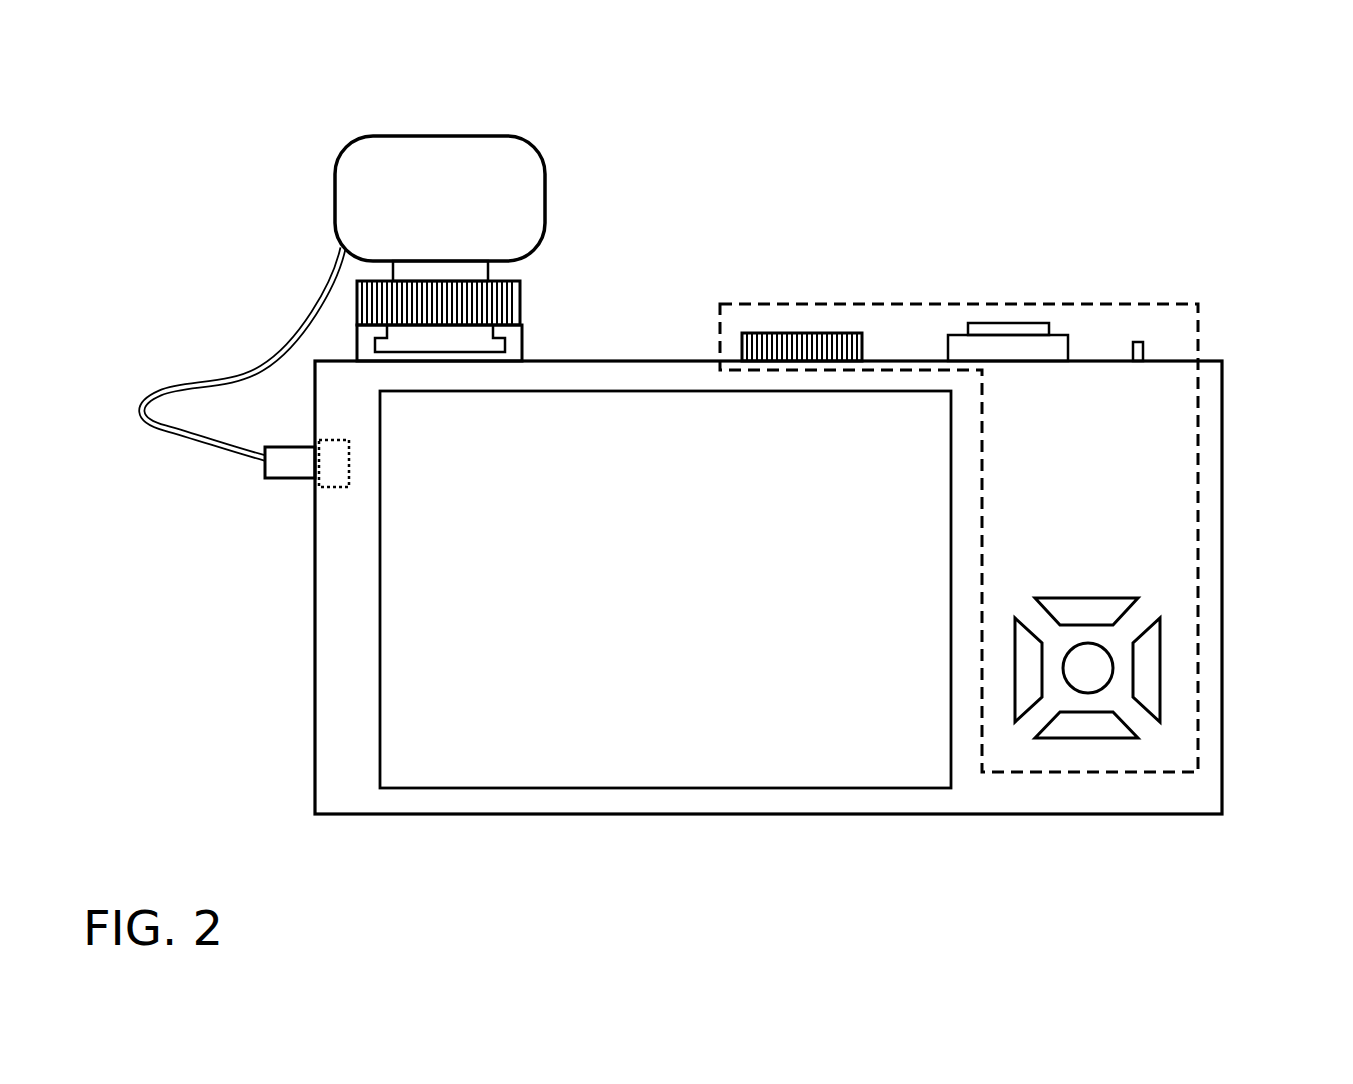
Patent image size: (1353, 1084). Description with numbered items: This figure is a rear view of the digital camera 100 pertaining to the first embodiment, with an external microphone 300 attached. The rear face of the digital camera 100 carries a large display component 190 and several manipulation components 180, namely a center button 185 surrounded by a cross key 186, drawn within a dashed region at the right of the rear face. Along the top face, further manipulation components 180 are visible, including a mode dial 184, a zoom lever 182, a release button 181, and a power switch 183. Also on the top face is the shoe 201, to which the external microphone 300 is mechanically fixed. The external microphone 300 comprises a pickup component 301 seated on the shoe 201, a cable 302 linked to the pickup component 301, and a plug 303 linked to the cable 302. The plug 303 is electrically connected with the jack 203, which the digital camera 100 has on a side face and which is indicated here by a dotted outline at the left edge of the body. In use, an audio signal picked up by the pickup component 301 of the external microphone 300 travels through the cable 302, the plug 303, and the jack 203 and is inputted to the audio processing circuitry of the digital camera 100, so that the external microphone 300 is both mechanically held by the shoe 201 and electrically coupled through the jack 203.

The digital camera 100 is at (538, 847).
The manipulation components 180 is at (1195, 772).
The release button 181 is at (1038, 331).
The zoom lever 182 is at (966, 350).
The power switch 183 is at (1143, 347).
The mode dial 184 is at (752, 340).
The center button 185 is at (1095, 667).
The cross key 186 is at (1095, 609).
The display component 190 is at (473, 608).
The shoe 201 is at (375, 336).
The jack 203 is at (330, 462).
The external microphone 300 is at (582, 158).
The pickup component 301 is at (437, 150).
The cable 302 is at (246, 366).
The plug 303 is at (290, 465).